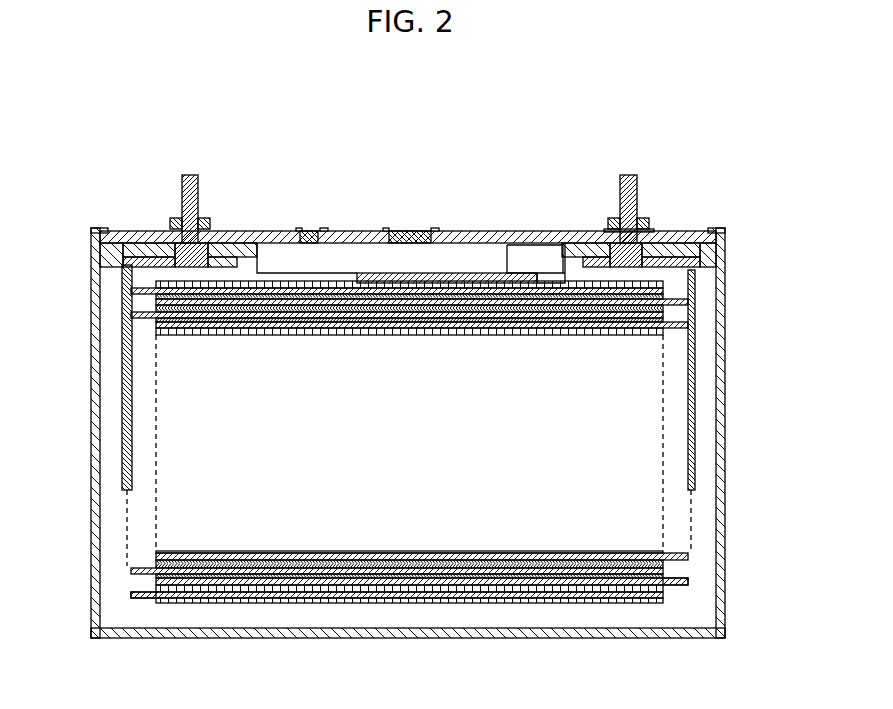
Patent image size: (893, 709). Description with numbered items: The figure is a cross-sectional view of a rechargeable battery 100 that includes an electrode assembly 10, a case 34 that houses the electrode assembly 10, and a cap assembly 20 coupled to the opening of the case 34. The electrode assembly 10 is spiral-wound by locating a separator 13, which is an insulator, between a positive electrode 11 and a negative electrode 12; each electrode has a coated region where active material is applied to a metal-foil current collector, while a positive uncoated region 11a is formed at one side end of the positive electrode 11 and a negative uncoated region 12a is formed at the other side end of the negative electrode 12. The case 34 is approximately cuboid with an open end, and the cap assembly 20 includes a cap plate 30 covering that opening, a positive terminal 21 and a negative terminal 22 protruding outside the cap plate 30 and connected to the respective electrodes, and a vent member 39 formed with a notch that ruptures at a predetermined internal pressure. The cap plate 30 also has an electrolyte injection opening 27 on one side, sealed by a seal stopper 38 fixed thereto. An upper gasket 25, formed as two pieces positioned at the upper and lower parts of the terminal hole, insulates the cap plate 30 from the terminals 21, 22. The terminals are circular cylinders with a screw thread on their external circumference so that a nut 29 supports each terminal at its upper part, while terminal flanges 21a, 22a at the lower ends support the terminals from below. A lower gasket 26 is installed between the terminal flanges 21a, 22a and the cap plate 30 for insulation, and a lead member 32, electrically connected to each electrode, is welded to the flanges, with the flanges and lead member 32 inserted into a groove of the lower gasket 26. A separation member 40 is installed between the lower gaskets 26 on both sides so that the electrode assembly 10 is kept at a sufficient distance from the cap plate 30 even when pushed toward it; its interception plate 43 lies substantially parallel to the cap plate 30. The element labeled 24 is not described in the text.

The rechargeable battery 100 is at (390, 122).
The electrode assembly 10 is at (481, 518).
The positive electrode 11 is at (250, 598).
The positive uncoated region 11a is at (140, 598).
The negative electrode 12 is at (297, 583).
The negative uncoated region 12a is at (676, 586).
The separator 13 is at (409, 579).
The cap assembly 20 is at (266, 229).
The positive terminal 21 is at (200, 181).
The terminal flange 21a is at (177, 268).
The negative terminal 22 is at (618, 185).
The terminal flange 22a is at (643, 267).
The terminal plate 24 is at (608, 232).
The upper gasket 25 is at (652, 231).
The lower gasket 26 is at (110, 259).
The electrolyte injection opening 27 is at (333, 244).
The nut 29 is at (180, 219).
The cap plate 30 is at (468, 232).
The lead member 32 is at (120, 402).
The case 34 is at (722, 376).
The seal stopper 38 is at (306, 231).
The vent member 39 is at (411, 231).
The separation member 40 is at (345, 273).
The interception plate 43 is at (500, 273).